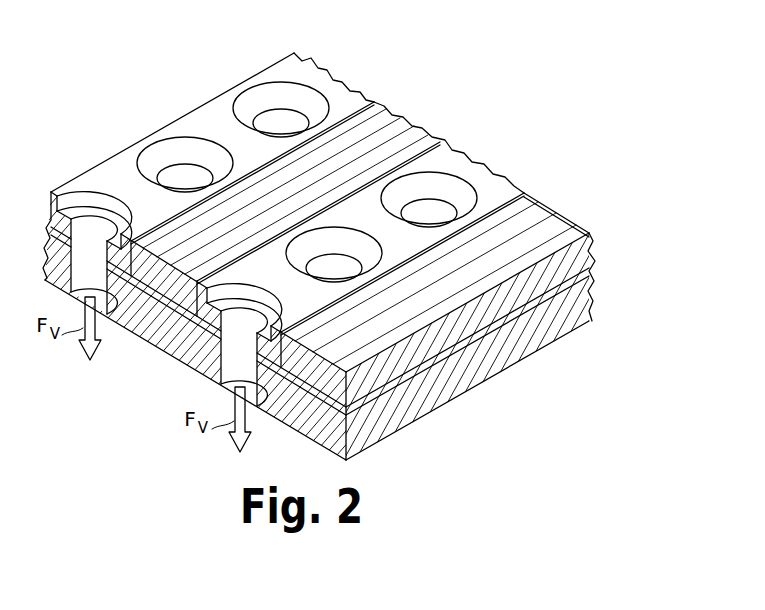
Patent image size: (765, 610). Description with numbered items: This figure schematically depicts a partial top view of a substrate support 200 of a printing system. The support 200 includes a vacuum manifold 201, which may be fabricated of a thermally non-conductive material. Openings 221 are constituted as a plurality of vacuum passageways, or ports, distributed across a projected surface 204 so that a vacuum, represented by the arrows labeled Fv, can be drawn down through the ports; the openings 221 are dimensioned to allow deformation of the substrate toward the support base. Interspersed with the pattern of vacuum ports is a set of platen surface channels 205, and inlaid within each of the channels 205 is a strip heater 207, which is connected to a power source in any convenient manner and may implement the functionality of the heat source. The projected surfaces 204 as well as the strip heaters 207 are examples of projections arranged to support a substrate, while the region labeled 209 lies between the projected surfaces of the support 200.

The substrate support 200 is at (141, 82).
The vacuum manifold 201 is at (592, 285).
The projected surface 204 is at (213, 110).
The platen surface channel 205 is at (157, 303).
The strip heater 207 is at (411, 116).
The recessed channel 209 is at (356, 104).
The opening 221 is at (263, 93).